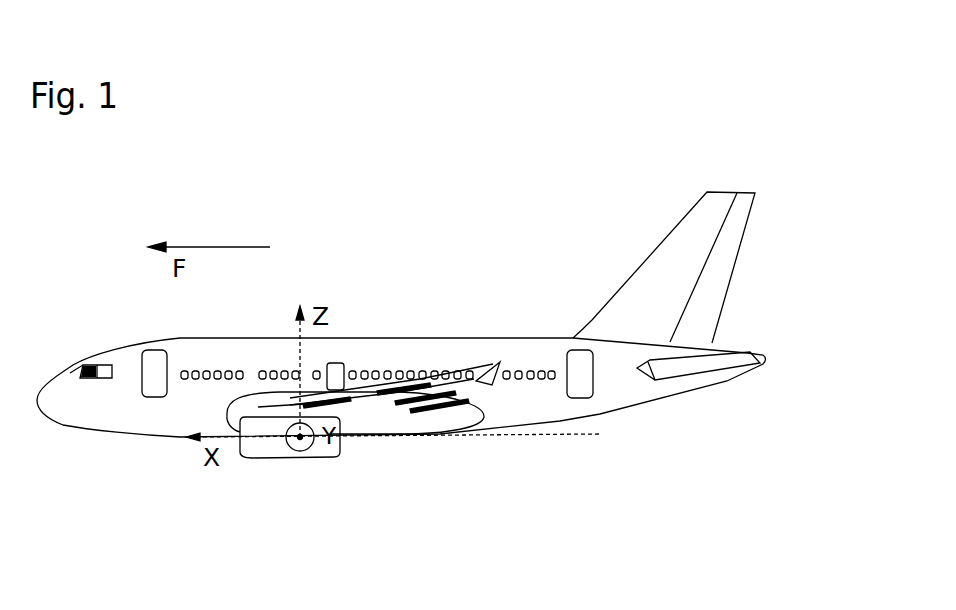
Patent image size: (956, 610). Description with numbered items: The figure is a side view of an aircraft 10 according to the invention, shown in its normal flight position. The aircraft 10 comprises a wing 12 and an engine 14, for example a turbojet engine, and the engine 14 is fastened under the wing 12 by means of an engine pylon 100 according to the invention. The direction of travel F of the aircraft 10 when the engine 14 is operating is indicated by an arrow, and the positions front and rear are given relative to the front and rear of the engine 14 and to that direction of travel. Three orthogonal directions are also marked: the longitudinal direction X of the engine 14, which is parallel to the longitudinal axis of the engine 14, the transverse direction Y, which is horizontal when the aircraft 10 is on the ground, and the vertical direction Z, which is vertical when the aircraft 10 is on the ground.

The aircraft 10 is at (528, 272).
The wing 12 is at (345, 405).
The engine 14 is at (280, 438).
The engine pylon 100 is at (347, 422).